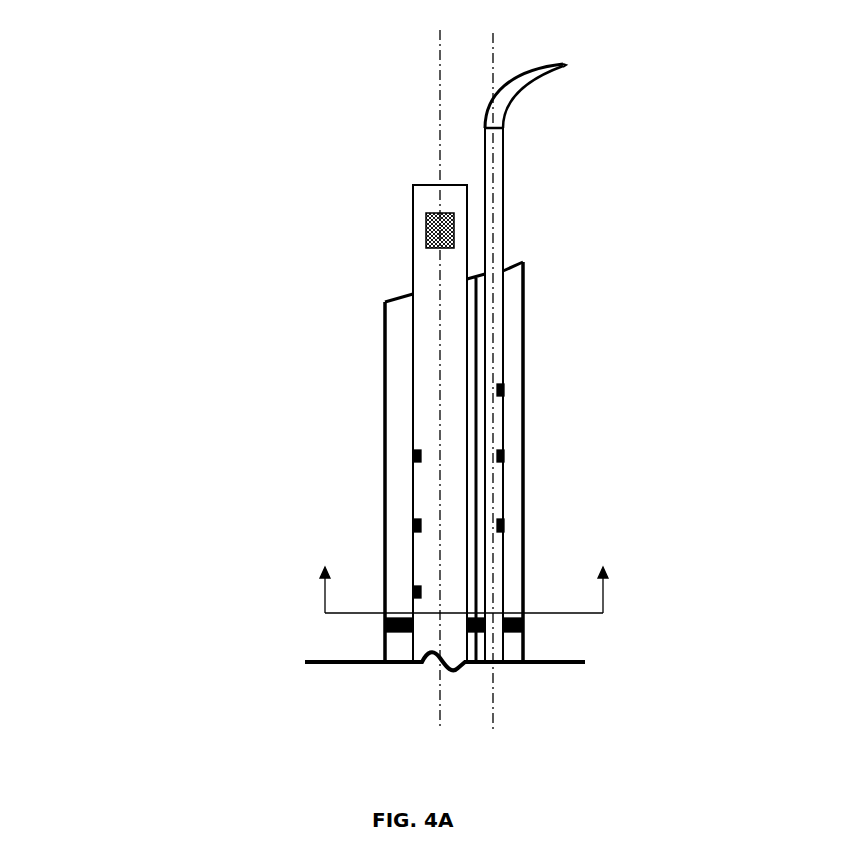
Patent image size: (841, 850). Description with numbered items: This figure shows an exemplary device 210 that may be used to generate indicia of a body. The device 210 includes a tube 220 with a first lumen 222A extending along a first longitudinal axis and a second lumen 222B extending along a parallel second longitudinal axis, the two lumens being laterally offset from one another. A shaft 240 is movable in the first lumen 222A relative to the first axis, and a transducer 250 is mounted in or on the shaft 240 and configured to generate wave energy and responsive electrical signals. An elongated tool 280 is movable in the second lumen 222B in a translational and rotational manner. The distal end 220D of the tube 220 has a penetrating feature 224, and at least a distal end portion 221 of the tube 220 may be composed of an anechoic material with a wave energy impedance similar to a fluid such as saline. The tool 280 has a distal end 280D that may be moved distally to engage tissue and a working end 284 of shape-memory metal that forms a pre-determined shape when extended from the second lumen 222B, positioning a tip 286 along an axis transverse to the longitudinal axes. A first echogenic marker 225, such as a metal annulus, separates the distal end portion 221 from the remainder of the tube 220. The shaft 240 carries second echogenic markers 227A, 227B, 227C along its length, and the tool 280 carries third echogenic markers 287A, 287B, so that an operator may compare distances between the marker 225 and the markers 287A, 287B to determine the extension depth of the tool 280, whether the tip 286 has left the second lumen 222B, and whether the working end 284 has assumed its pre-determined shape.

The device 210 is at (383, 384).
The tube 220 is at (383, 393).
The distal end 220D is at (528, 263).
The distal end portion 221 is at (527, 372).
The first lumen 222A is at (399, 346).
The second lumen 222B is at (513, 334).
The penetrating feature 224 is at (388, 302).
The first echogenic marker 225 is at (525, 627).
The second echogenic marker 227A is at (413, 455).
The second echogenic marker 227B is at (413, 524).
The second echogenic marker 227C is at (413, 590).
The shaft 240 is at (422, 320).
The transducer 250 is at (430, 228).
The elongated tool 280 is at (503, 213).
The distal end 280D is at (508, 128).
The working end 284 is at (533, 60).
The tip 286 is at (566, 65).
The third echogenic marker 287A is at (505, 387).
The third echogenic marker 287B is at (505, 455).